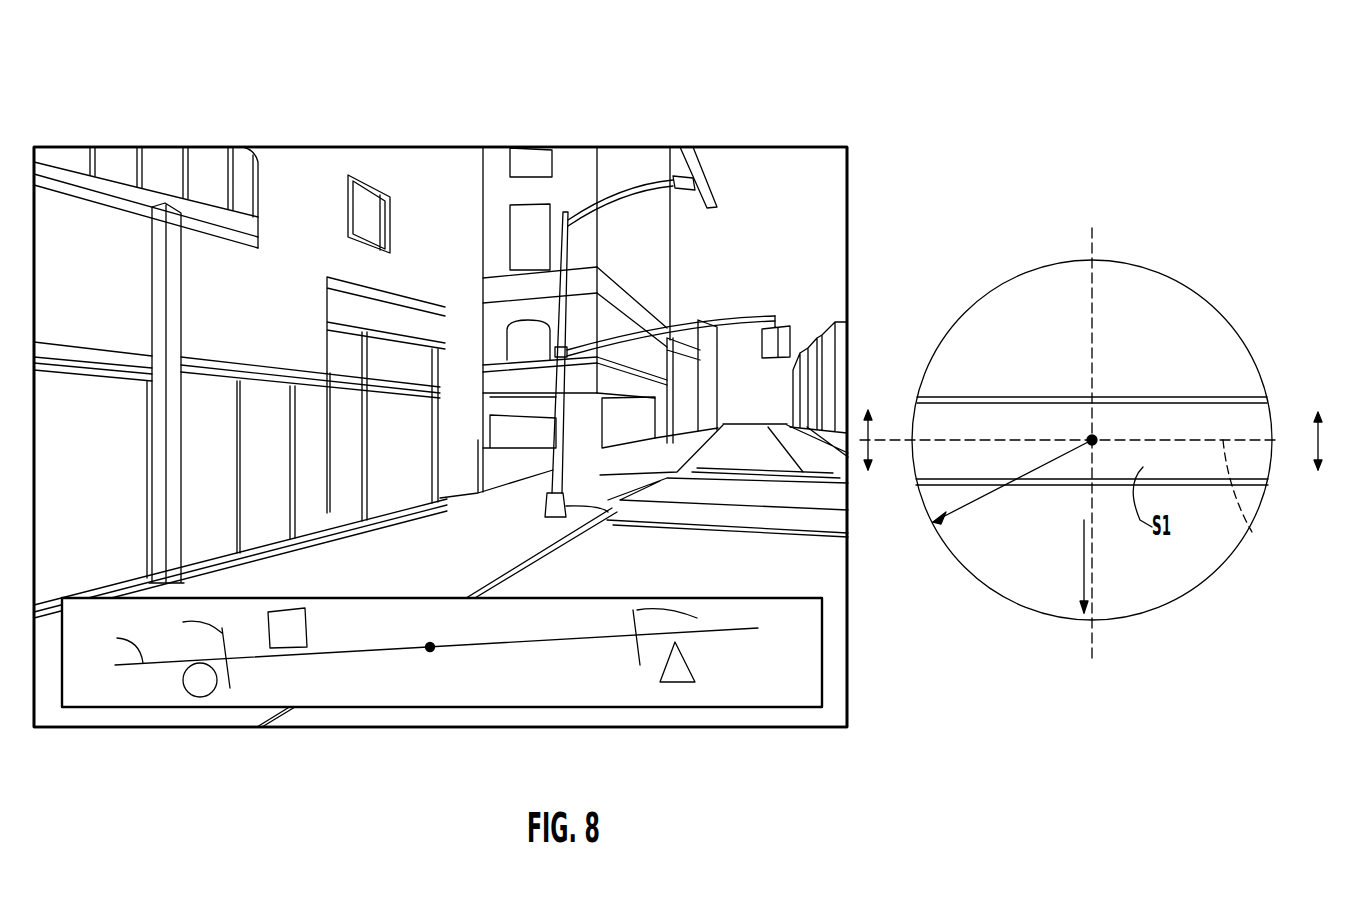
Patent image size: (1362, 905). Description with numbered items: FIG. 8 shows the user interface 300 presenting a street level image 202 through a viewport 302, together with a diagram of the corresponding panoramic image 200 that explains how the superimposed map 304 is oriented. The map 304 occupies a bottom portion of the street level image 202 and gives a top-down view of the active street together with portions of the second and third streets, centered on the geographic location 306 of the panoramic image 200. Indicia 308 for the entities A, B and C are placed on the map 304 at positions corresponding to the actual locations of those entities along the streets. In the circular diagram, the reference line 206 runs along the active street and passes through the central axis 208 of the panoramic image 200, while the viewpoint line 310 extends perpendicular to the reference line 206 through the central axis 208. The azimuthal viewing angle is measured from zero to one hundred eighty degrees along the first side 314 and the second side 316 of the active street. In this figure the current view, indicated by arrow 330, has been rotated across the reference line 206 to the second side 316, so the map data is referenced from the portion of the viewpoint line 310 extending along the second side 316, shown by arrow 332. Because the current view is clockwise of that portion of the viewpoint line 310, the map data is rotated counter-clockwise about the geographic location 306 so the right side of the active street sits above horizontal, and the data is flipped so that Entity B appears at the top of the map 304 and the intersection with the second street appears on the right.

The user interface 300 is at (845, 127).
The viewport 302 is at (848, 170).
The street level image 202 is at (825, 265).
The map 304 is at (797, 690).
The geographic location 306 is at (432, 650).
The indicia 308 is at (182, 688).
The panoramic image 200 is at (1177, 283).
The reference line 206 is at (1253, 533).
The central axis 208 is at (1090, 437).
The viewpoint line 310 is at (1088, 273).
The first side 314 is at (865, 427).
The second side 316 is at (860, 460).
The arrow 330 is at (967, 503).
The arrow 332 is at (1082, 573).